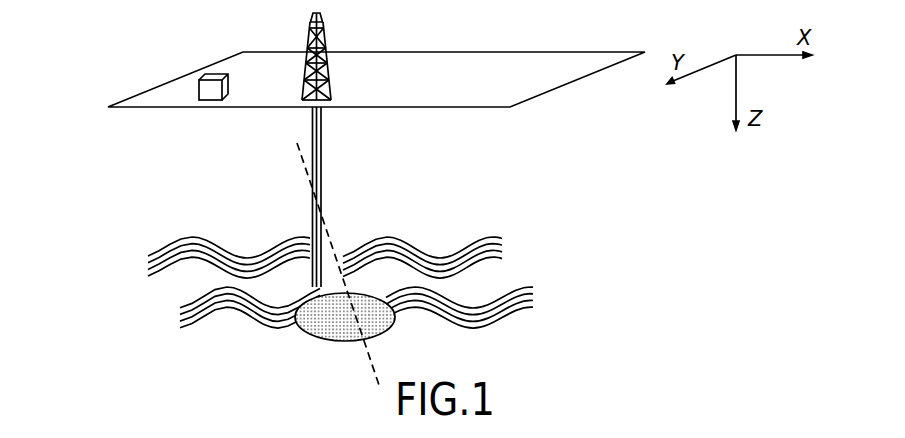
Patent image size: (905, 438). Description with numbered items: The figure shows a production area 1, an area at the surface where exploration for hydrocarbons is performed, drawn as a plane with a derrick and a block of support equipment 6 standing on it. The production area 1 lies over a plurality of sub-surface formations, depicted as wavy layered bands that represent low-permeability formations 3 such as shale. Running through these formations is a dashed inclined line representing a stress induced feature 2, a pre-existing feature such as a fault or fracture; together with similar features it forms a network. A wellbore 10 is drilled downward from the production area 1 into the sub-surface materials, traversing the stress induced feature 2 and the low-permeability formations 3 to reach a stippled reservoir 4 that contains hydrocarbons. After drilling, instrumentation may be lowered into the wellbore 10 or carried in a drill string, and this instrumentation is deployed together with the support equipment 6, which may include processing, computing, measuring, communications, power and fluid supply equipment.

The production area 1 is at (414, 59).
The stress induced feature 2 is at (330, 234).
The low-permeability formations 3 is at (507, 241).
The reservoir 4 is at (328, 332).
The support equipment 6 is at (198, 88).
The wellbore 10 is at (311, 118).